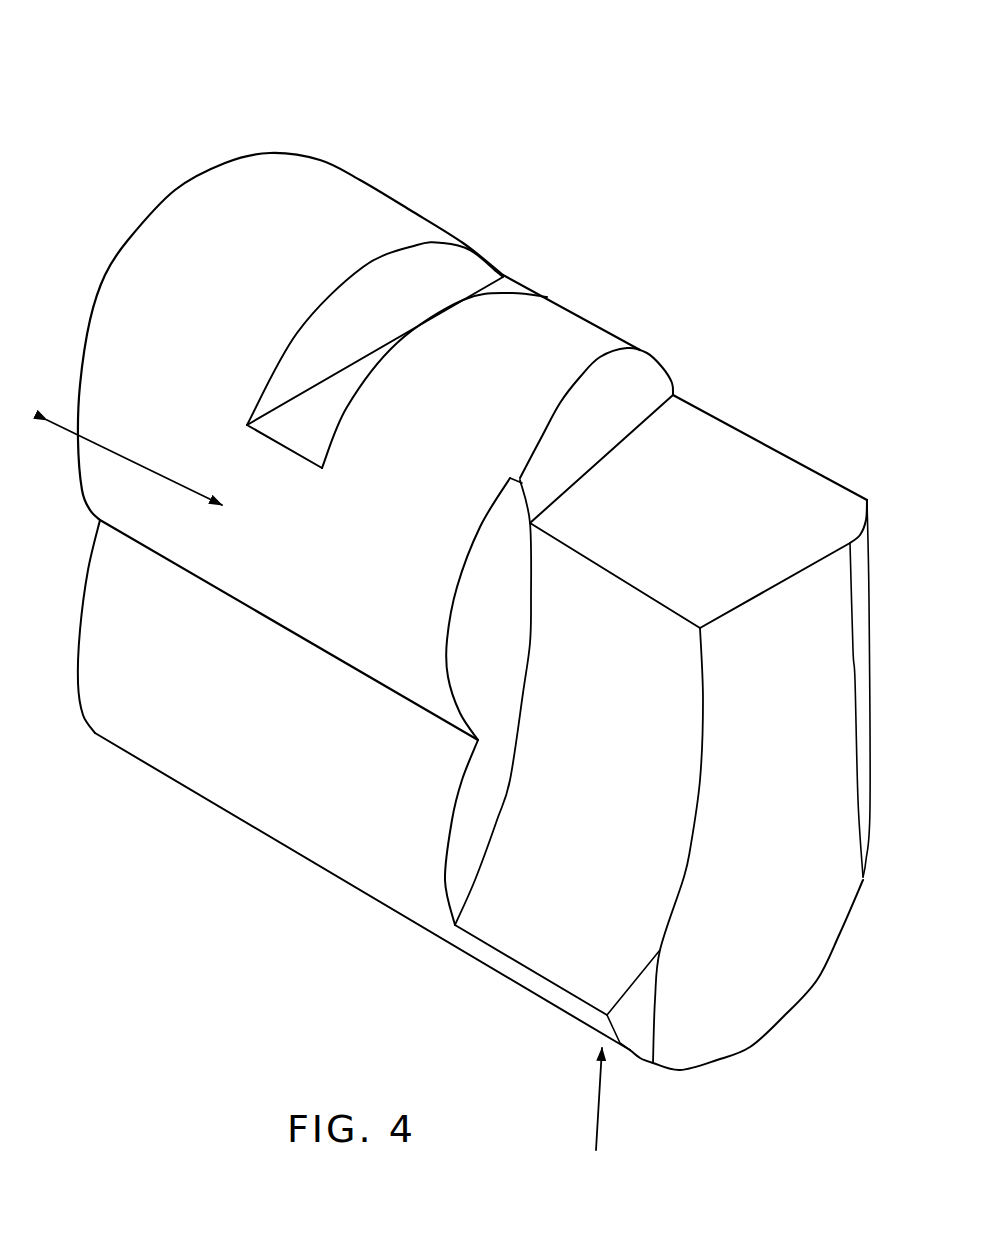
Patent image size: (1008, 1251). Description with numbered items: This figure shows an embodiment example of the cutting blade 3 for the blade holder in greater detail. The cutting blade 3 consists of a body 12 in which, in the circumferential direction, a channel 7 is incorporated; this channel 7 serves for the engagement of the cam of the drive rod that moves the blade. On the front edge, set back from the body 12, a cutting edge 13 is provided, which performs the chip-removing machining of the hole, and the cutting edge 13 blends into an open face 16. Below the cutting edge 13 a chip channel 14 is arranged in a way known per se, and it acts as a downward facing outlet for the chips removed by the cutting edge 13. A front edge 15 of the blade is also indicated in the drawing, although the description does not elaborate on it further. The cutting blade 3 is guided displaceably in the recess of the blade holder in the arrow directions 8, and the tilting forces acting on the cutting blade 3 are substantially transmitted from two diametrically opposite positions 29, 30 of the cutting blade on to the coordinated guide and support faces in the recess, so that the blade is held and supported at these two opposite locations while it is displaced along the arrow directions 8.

The cutting blade 3 is at (560, 237).
The channel 7 is at (437, 283).
The arrow directions 8 is at (140, 463).
The body 12 is at (342, 218).
The cutting edge 13 is at (635, 583).
The chip channel 14 is at (567, 812).
The front edge 15 is at (282, 630).
The open face 16 is at (757, 530).
The position 29 is at (232, 262).
The position 30 is at (590, 1120).